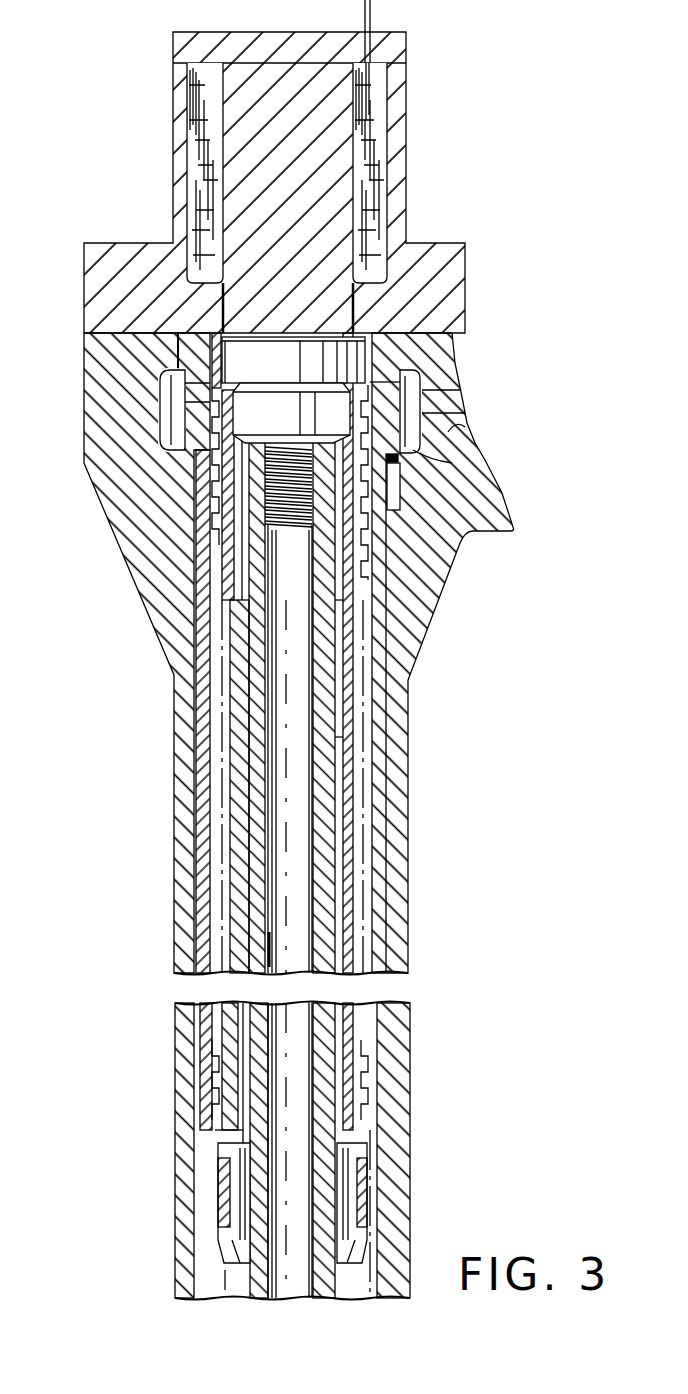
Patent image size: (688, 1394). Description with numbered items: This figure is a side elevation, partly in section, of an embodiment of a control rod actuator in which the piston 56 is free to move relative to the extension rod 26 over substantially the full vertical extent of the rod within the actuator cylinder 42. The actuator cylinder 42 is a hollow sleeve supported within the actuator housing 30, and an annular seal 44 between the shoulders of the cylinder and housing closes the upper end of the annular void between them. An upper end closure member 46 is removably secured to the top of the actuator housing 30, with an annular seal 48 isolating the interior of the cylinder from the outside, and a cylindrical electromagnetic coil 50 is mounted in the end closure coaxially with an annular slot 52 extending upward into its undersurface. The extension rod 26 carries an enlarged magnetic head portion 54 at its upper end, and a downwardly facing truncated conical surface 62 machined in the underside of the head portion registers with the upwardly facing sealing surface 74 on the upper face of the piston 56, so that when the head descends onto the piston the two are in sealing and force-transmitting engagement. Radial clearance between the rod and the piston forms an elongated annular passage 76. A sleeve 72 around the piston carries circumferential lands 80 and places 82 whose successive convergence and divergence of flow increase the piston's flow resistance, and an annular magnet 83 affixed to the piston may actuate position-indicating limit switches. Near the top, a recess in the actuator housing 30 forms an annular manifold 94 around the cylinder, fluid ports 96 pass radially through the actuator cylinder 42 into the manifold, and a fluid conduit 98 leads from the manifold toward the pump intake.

The extension rod 26 is at (253, 750).
The actuator housing 30 is at (173, 818).
The actuator cylinder 42 is at (380, 791).
The annular seal 44 is at (400, 465).
The upper end closure member 46 is at (175, 130).
The annular seal 48 is at (173, 330).
The electromagnetic coil 50 is at (375, 193).
The annular slot 52 is at (358, 309).
The head portion 54 is at (305, 338).
The piston 56 is at (207, 554).
The downwardly facing truncated conical surface 62 is at (400, 362).
The sleeve 72 is at (340, 597).
The upwardly facing sealing surface 74 is at (240, 357).
The annular passage 76 is at (337, 738).
The circumferential lands 80 is at (364, 503).
The circumferential places 82 is at (368, 560).
The annular magnet 83 is at (220, 1187).
The annular manifold 94 is at (452, 463).
The fluid ports 96 is at (368, 393).
The fluid conduit 98 is at (462, 423).